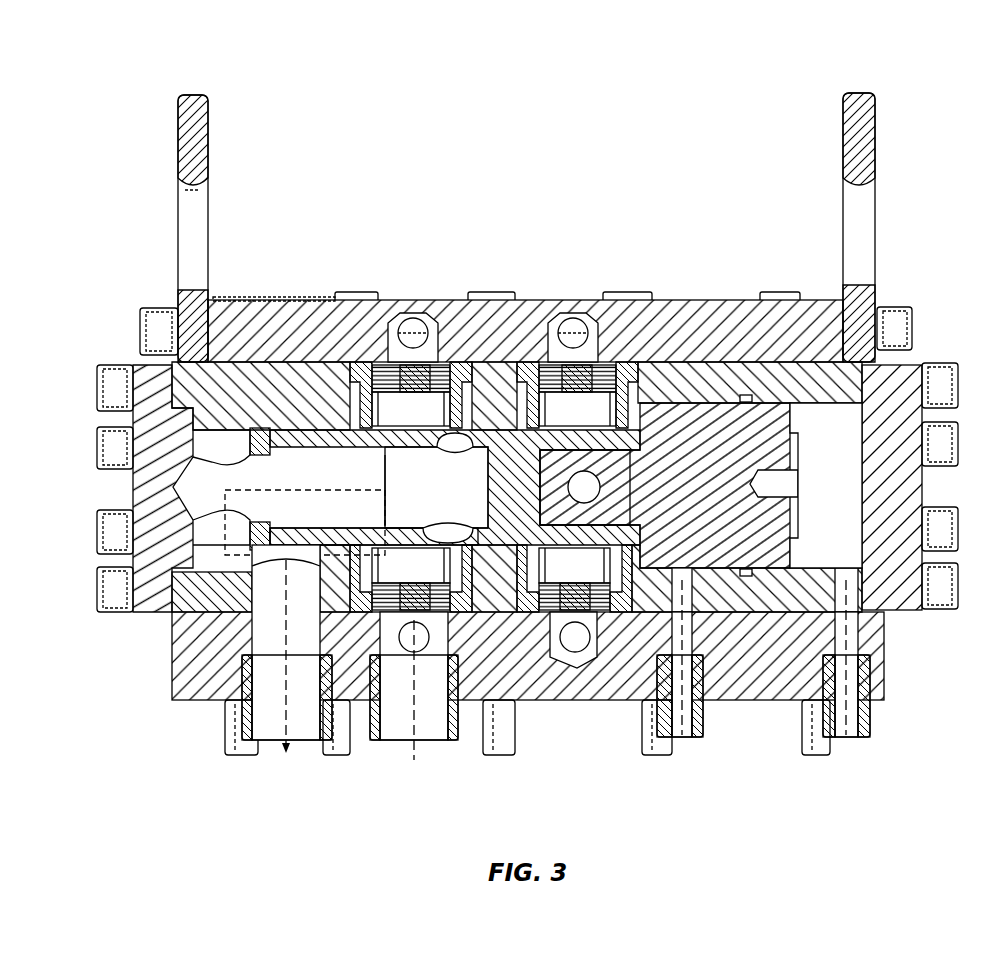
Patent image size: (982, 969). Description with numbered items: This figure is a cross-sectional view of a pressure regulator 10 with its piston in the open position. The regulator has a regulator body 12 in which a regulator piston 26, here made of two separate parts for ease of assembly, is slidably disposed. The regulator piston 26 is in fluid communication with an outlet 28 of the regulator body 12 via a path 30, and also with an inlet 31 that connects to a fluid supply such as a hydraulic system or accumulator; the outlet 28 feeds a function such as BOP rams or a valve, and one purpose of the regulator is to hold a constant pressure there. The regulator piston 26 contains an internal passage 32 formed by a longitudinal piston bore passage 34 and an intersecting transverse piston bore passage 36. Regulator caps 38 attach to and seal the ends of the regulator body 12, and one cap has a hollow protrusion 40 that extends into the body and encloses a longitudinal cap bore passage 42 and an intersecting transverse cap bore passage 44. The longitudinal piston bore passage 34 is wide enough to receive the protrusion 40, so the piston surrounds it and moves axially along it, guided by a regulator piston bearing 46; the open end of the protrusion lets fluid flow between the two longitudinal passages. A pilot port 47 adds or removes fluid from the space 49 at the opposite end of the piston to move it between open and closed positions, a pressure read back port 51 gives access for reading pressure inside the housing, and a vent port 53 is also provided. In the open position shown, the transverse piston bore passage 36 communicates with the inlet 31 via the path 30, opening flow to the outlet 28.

The pressure regulator 10 is at (75, 76).
The regulator body 12 is at (742, 316).
The regulator piston 26 is at (531, 499).
The outlet 28 is at (296, 733).
The path 30 is at (290, 588).
The inlet 31 is at (432, 733).
The internal passage 32 is at (416, 466).
The longitudinal piston bore passage 34 is at (421, 524).
The transverse piston bore passage 36 is at (448, 488).
The regulator caps 38 is at (153, 511).
The protrusion 40 is at (343, 432).
The longitudinal cap bore passage 42 is at (305, 515).
The transverse cap bore passage 44 is at (276, 549).
The regulator piston bearing 46 is at (289, 449).
The pilot port 47 is at (852, 737).
The space 49 is at (840, 499).
The pressure read back port 51 is at (688, 737).
The vent port 53 is at (590, 574).